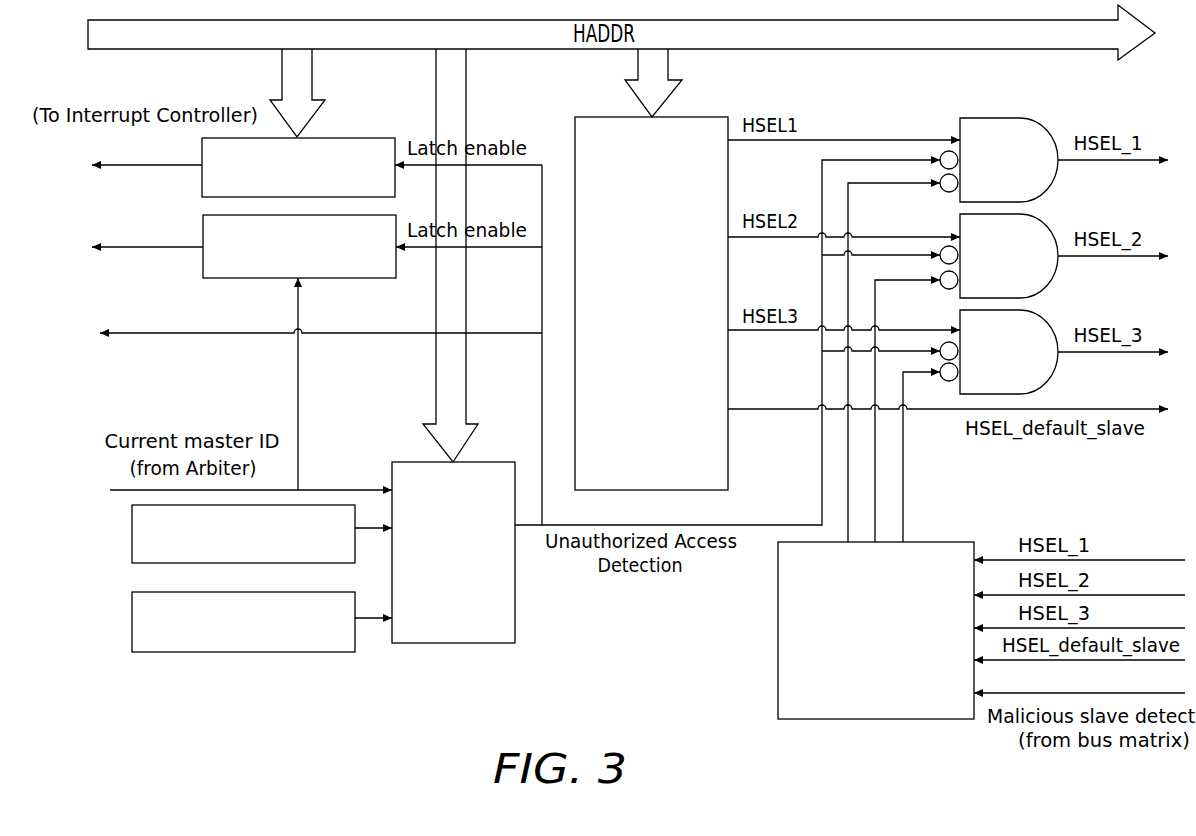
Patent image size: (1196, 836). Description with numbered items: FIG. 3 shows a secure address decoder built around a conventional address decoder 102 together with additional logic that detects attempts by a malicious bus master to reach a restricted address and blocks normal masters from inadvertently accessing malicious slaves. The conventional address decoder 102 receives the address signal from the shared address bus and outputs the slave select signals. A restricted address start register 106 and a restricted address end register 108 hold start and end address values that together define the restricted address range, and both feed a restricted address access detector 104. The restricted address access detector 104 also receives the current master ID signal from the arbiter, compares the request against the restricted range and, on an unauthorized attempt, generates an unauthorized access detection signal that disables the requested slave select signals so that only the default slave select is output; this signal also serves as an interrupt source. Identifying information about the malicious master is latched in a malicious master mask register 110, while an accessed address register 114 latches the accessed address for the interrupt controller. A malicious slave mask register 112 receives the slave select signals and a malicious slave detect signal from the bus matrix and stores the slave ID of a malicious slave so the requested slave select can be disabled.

The conventional address decoder 102 is at (651, 303).
The restricted address access detector 104 is at (453, 552).
The restricted address start register 106 is at (243, 534).
The restricted address end register 108 is at (243, 622).
The malicious master mask register 110 is at (299, 246).
The malicious slave mask register 112 is at (876, 630).
The accessed address register 114 is at (298, 167).